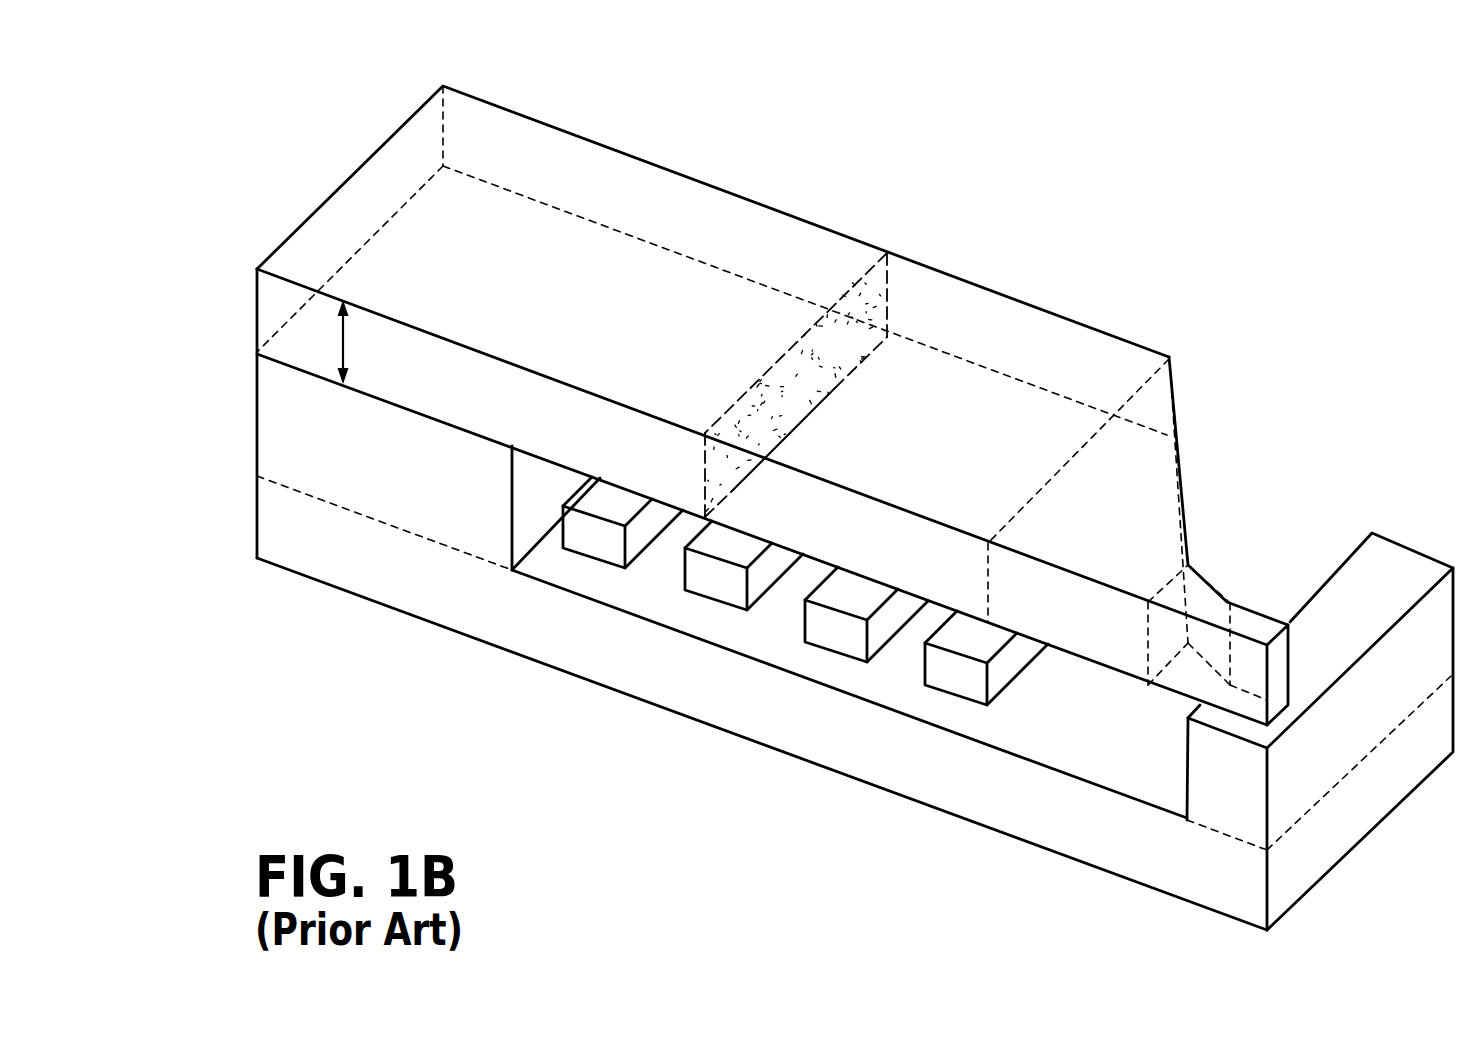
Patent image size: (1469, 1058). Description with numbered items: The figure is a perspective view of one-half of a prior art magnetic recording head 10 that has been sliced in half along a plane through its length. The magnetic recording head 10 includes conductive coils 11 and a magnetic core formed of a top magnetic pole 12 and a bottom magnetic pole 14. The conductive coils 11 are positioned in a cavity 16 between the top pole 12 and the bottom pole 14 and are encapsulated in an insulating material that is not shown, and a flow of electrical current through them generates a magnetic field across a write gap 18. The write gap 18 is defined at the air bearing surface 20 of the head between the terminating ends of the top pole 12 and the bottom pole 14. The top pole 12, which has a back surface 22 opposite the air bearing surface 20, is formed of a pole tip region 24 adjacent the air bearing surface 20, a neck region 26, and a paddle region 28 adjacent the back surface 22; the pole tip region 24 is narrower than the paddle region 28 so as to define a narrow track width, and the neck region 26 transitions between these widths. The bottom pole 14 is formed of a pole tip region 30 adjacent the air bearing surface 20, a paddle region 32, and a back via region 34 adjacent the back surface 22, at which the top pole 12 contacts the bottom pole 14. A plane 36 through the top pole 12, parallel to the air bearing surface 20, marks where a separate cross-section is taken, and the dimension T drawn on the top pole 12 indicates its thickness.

The magnetic recording head 10 is at (1314, 252).
The conductive coils 11 is at (617, 553).
The top magnetic pole 12 is at (727, 192).
The bottom magnetic pole 14 is at (422, 620).
The cavity 16 is at (643, 578).
The write gap 18 is at (1237, 728).
The air bearing surface 20 is at (1298, 852).
The back surface 22 is at (255, 493).
The pole tip region 24 is at (1180, 684).
The neck region 26 is at (1060, 640).
The paddle region 28 is at (899, 580).
The pole tip region 30 is at (1220, 809).
The paddle region 32 is at (1200, 889).
The back via region 34 is at (332, 453).
The plane 36 is at (810, 375).
The thickness T is at (328, 342).